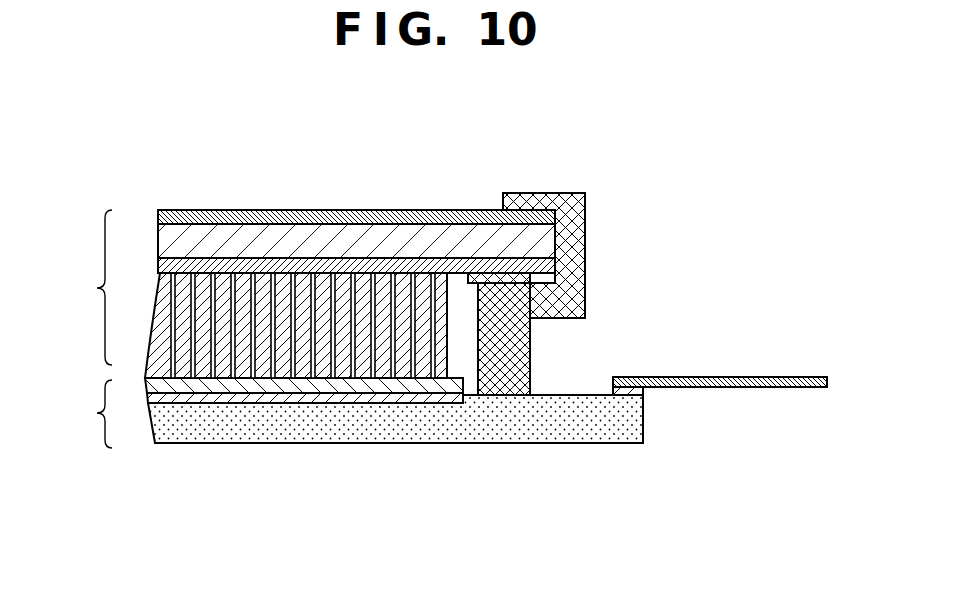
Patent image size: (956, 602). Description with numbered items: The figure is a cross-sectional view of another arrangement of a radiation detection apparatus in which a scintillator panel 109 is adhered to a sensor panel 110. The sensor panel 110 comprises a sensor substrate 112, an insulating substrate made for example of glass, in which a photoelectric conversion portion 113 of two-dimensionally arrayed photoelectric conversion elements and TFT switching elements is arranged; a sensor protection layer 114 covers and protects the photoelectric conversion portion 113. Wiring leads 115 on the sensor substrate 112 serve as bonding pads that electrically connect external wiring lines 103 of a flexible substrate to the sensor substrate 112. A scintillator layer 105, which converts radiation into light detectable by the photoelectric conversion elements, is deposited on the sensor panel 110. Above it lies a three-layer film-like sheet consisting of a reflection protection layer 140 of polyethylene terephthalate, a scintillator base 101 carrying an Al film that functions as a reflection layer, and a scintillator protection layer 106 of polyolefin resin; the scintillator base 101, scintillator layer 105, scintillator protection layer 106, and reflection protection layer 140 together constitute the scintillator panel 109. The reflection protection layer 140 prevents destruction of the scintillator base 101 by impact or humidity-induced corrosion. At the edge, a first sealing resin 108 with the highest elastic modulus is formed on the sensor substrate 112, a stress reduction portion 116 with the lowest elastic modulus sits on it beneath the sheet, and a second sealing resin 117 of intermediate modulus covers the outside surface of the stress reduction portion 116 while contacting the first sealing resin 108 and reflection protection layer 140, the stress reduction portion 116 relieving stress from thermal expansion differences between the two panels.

The reflection protection layer 140 is at (198, 211).
The scintillator base 101 is at (272, 233).
The scintillator protection layer 106 is at (342, 266).
The scintillator layer 105 is at (449, 283).
The second sealing resin 117 is at (585, 223).
The stress reduction portion 116 is at (530, 278).
The first sealing resin 108 is at (518, 342).
The external wiring lines 103 is at (760, 377).
The wiring leads 115 is at (628, 390).
The sensor substrate 112 is at (230, 427).
The photoelectric conversion portion 113 is at (333, 397).
The sensor protection layer 114 is at (432, 383).
The scintillator panel 109 is at (80, 287).
The sensor panel 110 is at (80, 414).